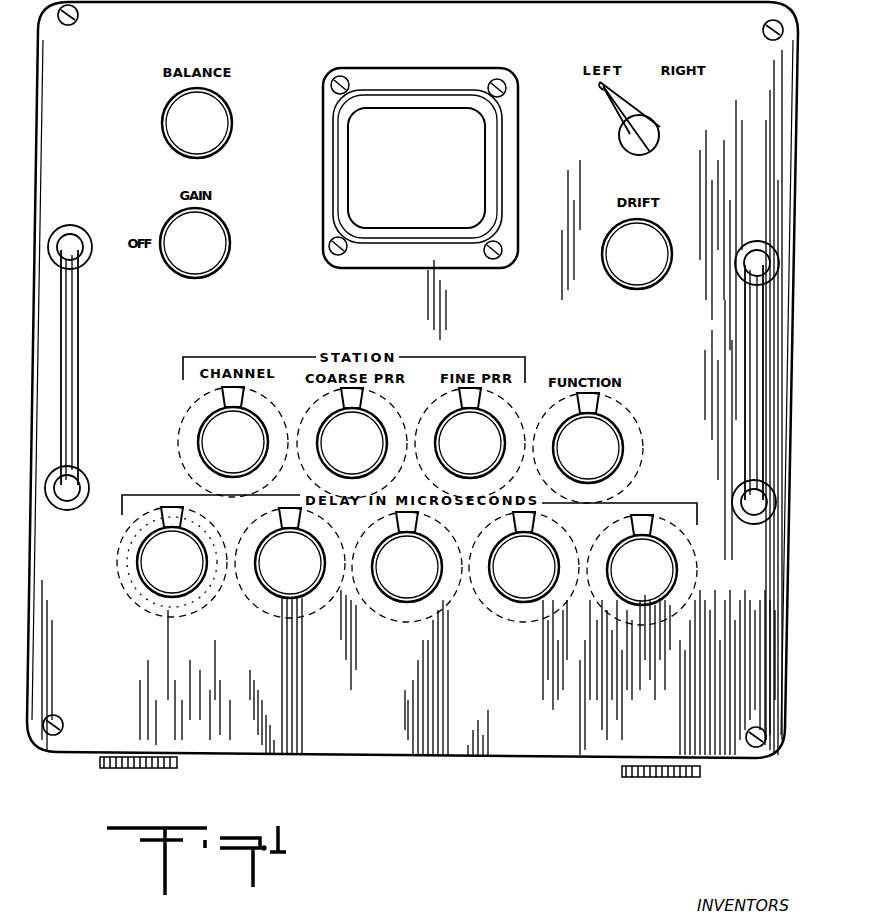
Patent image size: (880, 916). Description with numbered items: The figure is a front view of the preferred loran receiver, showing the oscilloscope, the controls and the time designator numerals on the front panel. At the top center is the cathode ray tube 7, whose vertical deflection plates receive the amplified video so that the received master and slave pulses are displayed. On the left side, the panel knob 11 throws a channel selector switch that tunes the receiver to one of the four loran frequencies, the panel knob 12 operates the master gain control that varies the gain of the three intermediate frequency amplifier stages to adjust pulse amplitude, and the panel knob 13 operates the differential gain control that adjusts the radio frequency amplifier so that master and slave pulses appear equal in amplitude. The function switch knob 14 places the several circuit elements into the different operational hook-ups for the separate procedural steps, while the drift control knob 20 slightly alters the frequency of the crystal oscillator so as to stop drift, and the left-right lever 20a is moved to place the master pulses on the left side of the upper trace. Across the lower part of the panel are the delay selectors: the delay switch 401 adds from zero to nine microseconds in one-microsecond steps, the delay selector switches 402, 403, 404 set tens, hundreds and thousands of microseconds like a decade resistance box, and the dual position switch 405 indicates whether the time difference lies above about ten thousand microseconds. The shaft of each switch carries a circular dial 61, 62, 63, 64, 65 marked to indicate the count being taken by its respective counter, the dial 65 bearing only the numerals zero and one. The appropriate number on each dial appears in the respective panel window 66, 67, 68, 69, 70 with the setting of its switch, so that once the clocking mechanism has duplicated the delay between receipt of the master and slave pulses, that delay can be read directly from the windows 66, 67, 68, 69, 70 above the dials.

The cathode ray tube 7 is at (420, 168).
The panel knob 11 is at (233, 442).
The panel knob 12 is at (195, 243).
The panel knob 13 is at (197, 123).
The function switch knob 14 is at (588, 448).
The drift control knob 20 is at (637, 254).
The left-right lever 20a is at (620, 148).
The delay switch 401 is at (642, 570).
The delay selector switch 402 is at (524, 567).
The delay selector switch 403 is at (407, 567).
The delay selector switch 404 is at (290, 563).
The dual position switch 405 is at (172, 562).
The circular dial 61 is at (636, 622).
The circular dial 62 is at (512, 620).
The circular dial 63 is at (400, 618).
The circular dial 64 is at (272, 612).
The circular dial 65 is at (158, 612).
The panel window 66 is at (653, 527).
The panel window 67 is at (535, 524).
The panel window 68 is at (418, 522).
The panel window 69 is at (300, 520).
The panel window 70 is at (184, 518).